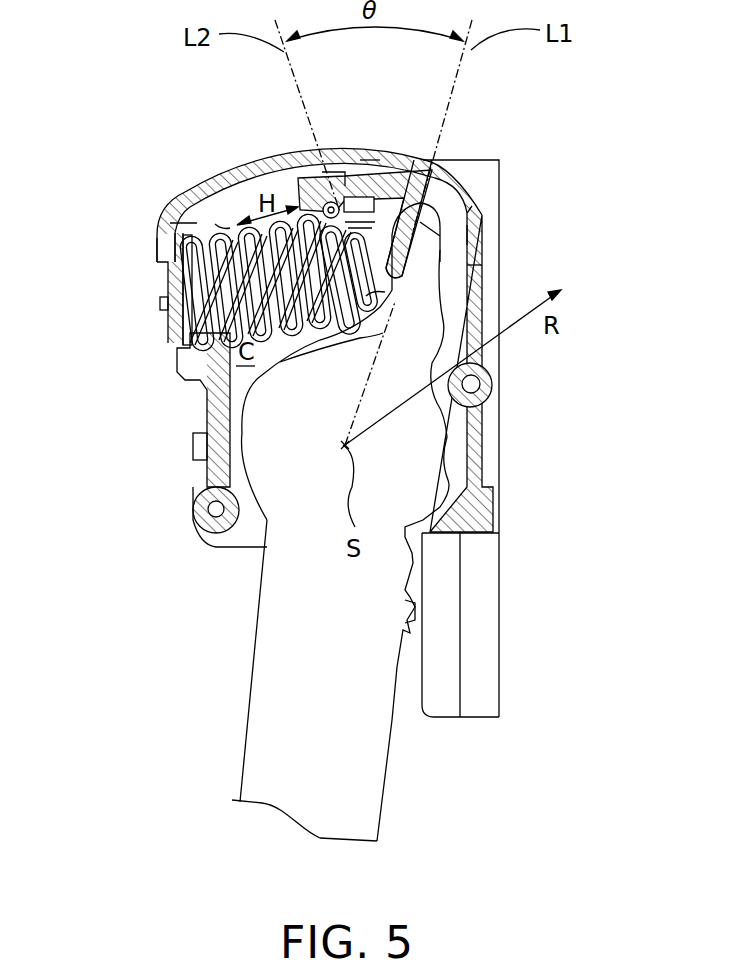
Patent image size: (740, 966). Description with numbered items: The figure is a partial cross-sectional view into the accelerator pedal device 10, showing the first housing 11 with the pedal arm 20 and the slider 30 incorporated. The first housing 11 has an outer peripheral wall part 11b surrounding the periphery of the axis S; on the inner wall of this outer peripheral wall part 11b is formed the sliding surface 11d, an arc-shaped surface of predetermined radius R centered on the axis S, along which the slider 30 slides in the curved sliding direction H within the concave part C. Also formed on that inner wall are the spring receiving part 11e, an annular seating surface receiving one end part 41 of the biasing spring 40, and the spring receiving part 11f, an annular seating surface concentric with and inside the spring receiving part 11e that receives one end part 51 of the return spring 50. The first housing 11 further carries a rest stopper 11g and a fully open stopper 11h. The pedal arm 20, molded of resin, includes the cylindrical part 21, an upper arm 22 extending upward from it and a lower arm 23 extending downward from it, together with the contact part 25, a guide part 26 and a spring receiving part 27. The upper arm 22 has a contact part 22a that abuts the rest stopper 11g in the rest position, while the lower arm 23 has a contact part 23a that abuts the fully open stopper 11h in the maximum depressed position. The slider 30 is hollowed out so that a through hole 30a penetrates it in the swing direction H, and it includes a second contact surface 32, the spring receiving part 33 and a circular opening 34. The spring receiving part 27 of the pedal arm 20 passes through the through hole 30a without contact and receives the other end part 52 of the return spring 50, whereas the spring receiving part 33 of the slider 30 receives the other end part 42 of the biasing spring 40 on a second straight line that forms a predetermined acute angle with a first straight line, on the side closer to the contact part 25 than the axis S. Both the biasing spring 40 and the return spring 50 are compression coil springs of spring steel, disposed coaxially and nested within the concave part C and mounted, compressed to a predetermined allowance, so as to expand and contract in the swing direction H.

The oral care device 10 is at (461, 438).
The first housing 11 is at (501, 157).
The outer peripheral wall part 11b is at (258, 170).
The sliding surface 11d is at (371, 165).
The spring receiving part 11e is at (157, 228).
The spring receiving part 11f is at (155, 236).
The rest stopper 11g is at (468, 233).
The fully open stopper 11h is at (418, 614).
The pedal arm 20 is at (246, 658).
The cylindrical part 21 is at (232, 537).
The upper arm 22 is at (467, 273).
The contact part 22a is at (442, 257).
The lower arm 23 is at (265, 715).
The contact part 23a is at (425, 630).
The contact part 25 is at (430, 232).
The guide part 26 is at (470, 212).
The spring receiving part 27 is at (350, 195).
The slider 30 is at (458, 187).
The through hole 30a is at (359, 205).
The second contact surface 32 is at (397, 187).
The spring receiving part 33 is at (380, 335).
The circular opening 34 is at (392, 298).
The biasing spring 40 is at (220, 212).
The one end part 41 is at (183, 357).
The other end part 42 is at (300, 190).
The return spring 50 is at (188, 232).
The one end part 51 is at (183, 330).
The other end part 52 is at (335, 172).